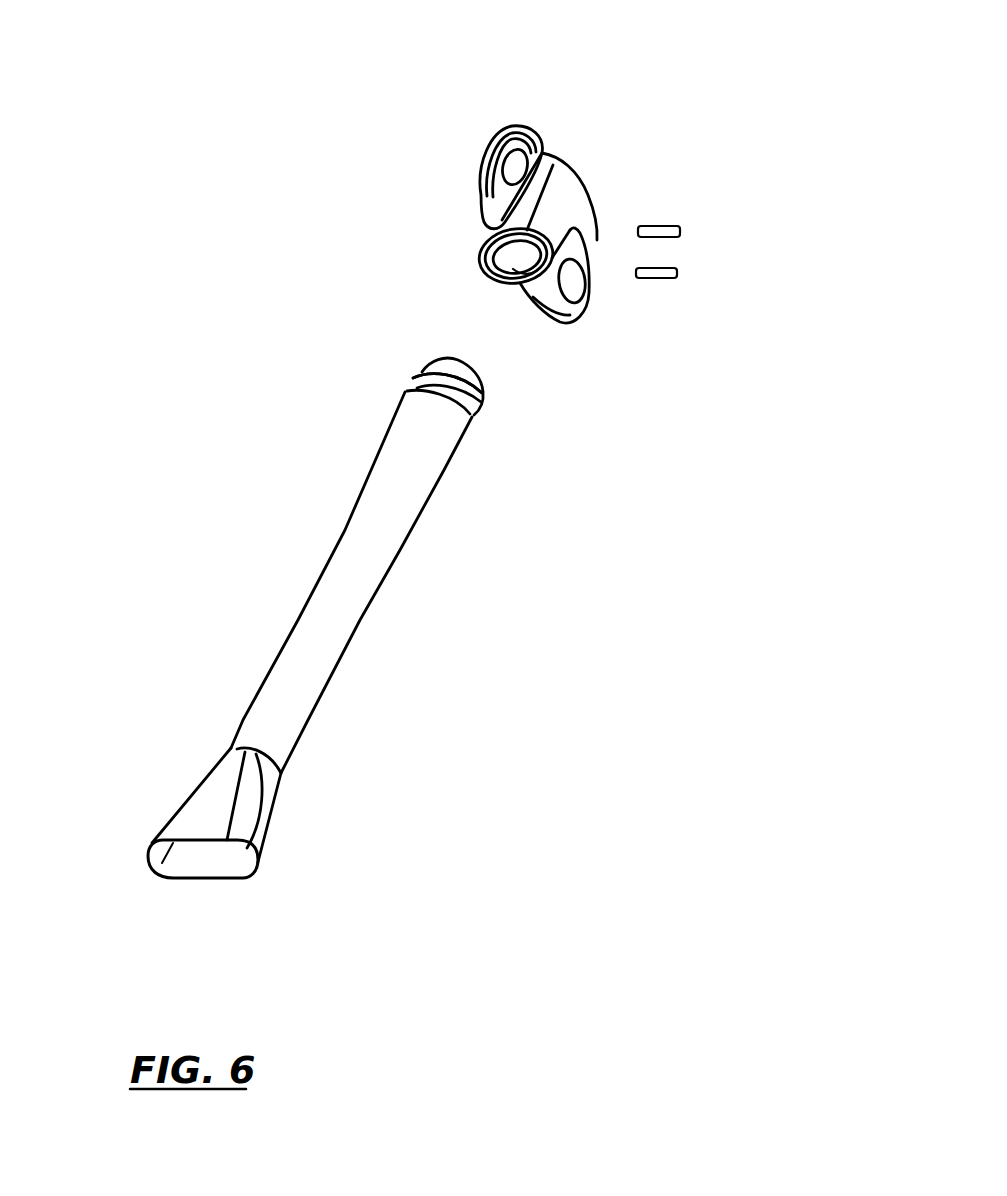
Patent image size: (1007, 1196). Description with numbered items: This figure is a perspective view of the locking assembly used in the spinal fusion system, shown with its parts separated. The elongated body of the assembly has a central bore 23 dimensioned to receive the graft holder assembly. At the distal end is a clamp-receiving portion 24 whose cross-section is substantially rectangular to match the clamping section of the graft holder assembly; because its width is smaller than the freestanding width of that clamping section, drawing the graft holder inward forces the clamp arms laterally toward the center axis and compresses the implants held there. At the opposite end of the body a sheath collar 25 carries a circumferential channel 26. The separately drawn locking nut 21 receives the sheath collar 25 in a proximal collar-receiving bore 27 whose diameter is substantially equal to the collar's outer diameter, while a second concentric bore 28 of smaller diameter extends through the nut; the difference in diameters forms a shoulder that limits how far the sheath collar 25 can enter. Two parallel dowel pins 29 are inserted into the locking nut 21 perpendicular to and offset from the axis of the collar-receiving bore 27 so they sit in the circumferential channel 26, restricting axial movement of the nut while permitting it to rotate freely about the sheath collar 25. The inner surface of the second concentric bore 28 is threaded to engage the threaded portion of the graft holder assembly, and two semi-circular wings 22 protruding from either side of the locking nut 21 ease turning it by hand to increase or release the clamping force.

The locking nut 21 is at (585, 165).
The semi-circular wings 22 is at (477, 163).
The central bore 23 is at (207, 853).
The clamp-receiving portion 24 is at (277, 865).
The sheath collar 25 is at (508, 412).
The circumferential channel 26 is at (420, 374).
The collar-receiving bore 27 is at (507, 257).
The second concentric bore 28 is at (567, 157).
The dowel pins 29 is at (683, 273).